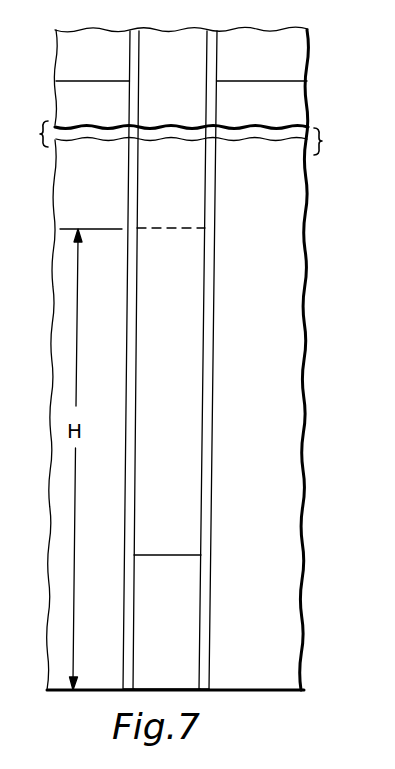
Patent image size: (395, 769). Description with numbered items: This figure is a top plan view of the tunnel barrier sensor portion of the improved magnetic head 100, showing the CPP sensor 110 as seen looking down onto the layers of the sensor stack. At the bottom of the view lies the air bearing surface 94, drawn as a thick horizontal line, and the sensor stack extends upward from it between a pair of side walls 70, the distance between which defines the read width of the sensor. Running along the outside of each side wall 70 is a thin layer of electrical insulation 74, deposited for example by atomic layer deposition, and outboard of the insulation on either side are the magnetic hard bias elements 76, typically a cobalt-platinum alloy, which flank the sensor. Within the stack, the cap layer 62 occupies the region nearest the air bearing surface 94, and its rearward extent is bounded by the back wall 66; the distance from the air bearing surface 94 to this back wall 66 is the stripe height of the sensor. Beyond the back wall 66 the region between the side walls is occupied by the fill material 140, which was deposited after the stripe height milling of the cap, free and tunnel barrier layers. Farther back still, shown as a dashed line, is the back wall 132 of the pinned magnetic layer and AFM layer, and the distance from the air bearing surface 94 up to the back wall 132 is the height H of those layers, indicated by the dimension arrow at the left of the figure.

The CPP sensor 110 is at (50, 99).
The magnetic head 100 is at (30, 137).
The magnetic hard bias elements 76 is at (106, 201).
The electrical insulation layer 74 is at (123, 603).
The fill material 140 is at (188, 517).
The back wall of the pinned magnetic layer and AFM layer 132 is at (192, 203).
The back wall of the cap layer, free magnetic layer and tunnel barrier layer 66 is at (157, 540).
The cap layer 62 is at (183, 616).
The side walls 70 is at (123, 639).
The air bearing surface 94 is at (158, 694).